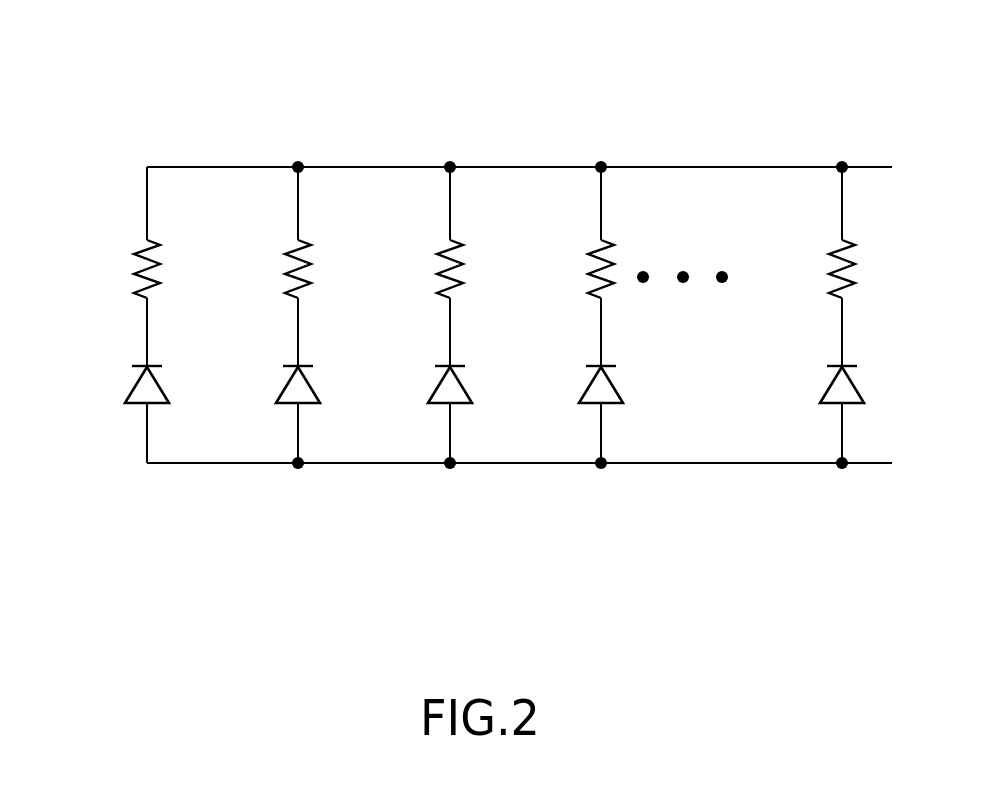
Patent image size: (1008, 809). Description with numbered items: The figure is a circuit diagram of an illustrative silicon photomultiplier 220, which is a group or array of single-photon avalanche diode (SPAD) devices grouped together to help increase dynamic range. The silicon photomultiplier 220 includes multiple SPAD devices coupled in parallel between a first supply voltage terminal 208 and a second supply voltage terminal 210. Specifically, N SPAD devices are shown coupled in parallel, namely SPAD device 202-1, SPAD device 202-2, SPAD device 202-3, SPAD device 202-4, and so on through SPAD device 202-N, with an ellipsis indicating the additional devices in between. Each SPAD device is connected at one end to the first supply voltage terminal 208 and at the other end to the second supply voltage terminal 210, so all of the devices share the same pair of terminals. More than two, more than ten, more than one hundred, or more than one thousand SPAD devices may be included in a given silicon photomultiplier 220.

The silicon photomultiplier 220 is at (118, 140).
The SPAD device 202-1 is at (100, 252).
The SPAD device 202-2 is at (254, 264).
The SPAD device 202-3 is at (406, 264).
The SPAD device 202-4 is at (557, 264).
The SPAD device 202-N is at (796, 264).
The first supply voltage terminal 208 is at (862, 167).
The second supply voltage terminal 210 is at (866, 463).